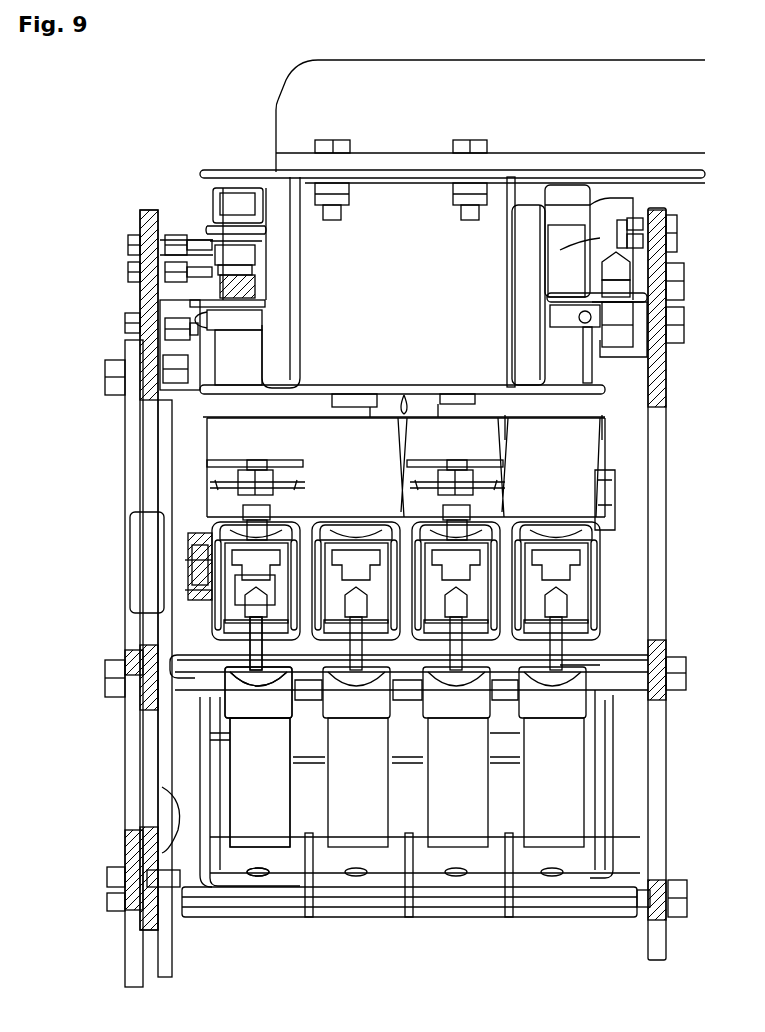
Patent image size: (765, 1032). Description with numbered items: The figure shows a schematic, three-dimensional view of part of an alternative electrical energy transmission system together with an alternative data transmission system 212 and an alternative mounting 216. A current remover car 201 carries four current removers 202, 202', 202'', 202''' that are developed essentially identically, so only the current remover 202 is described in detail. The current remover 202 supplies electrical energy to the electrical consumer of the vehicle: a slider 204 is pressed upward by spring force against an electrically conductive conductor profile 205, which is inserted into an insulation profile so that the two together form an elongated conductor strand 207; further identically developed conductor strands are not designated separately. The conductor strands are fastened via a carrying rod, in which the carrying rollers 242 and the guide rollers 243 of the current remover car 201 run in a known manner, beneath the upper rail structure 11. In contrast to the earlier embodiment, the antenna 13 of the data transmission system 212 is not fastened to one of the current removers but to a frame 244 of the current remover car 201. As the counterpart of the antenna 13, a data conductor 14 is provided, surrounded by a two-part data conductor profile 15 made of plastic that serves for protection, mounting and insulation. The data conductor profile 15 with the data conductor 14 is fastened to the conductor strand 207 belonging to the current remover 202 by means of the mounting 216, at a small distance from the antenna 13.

The upper frame rail 11 is at (252, 172).
The antenna 13 is at (130, 523).
The data conductor 14 is at (186, 580).
The data conductor profile 15 is at (186, 591).
The current remover car 201 is at (197, 920).
The current remover 202 is at (259, 813).
The current remover 202' is at (356, 813).
The current remover 202'' is at (456, 813).
The current remover 202''' is at (555, 813).
The slider 204 is at (248, 616).
The conductor profile 205 is at (245, 598).
The conductor strand 207 is at (302, 532).
The data transmission system 212 is at (170, 567).
The mounting 216 is at (198, 532).
The carrying rollers 242 is at (530, 359).
The guide rollers 243 is at (508, 226).
The frame 244 is at (121, 347).